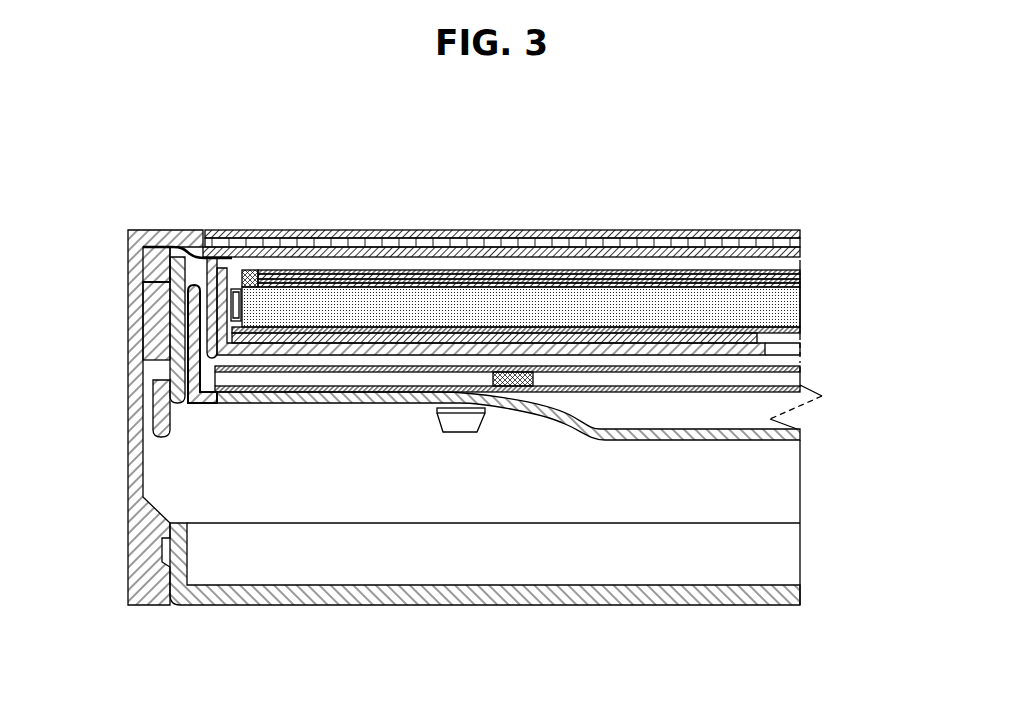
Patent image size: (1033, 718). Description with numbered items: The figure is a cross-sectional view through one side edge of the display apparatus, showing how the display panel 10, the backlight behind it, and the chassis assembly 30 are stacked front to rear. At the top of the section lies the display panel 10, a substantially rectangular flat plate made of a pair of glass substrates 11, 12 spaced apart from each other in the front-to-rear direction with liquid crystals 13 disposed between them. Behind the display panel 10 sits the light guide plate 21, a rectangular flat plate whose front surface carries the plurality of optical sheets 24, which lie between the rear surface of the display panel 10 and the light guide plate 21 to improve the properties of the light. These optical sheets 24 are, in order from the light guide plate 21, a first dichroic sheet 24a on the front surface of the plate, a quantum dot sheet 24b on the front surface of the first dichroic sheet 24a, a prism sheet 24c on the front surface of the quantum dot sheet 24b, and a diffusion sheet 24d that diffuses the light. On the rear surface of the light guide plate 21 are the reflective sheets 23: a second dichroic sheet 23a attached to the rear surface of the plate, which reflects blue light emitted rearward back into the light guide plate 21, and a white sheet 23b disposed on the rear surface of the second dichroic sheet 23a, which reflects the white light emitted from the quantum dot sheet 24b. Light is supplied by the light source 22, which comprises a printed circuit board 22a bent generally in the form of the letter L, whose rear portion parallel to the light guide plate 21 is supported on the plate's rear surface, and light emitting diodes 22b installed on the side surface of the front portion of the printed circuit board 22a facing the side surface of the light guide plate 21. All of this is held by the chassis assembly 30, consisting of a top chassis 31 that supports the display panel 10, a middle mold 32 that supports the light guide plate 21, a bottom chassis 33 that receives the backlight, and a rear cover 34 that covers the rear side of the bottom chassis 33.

The display panel 10 is at (501, 199).
The glass substrate 11 is at (540, 230).
The glass substrate 12 is at (608, 245).
The liquid crystals 13 is at (578, 240).
The light guide plate 21 is at (800, 302).
The light source 22 is at (221, 276).
The printed circuit board 22a is at (298, 352).
The light emitting diode 22b is at (230, 287).
The reflective sheets 23 is at (900, 337).
The second dichroic sheet 23a is at (800, 334).
The white sheet 23b is at (800, 330).
The optical sheets 24 is at (598, 224).
The first dichroic sheet 24a is at (575, 267).
The quantum dot sheet 24b is at (800, 282).
The prism sheet 24c is at (800, 278).
The diffusion sheet 24d is at (800, 273).
The chassis assembly 30 is at (68, 495).
The top chassis 31 is at (153, 334).
The middle mold 32 is at (178, 364).
The bottom chassis 33 is at (215, 400).
The rear cover 34 is at (183, 542).